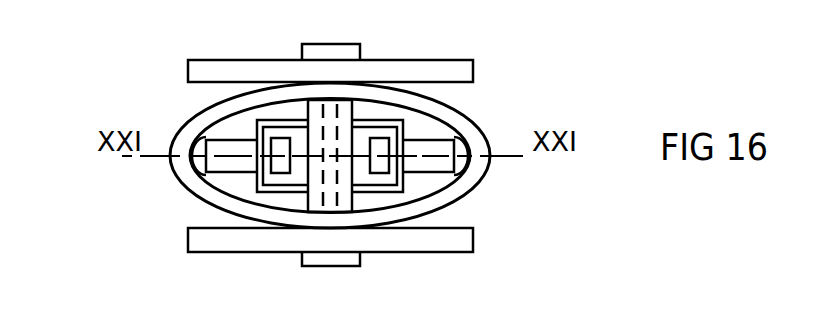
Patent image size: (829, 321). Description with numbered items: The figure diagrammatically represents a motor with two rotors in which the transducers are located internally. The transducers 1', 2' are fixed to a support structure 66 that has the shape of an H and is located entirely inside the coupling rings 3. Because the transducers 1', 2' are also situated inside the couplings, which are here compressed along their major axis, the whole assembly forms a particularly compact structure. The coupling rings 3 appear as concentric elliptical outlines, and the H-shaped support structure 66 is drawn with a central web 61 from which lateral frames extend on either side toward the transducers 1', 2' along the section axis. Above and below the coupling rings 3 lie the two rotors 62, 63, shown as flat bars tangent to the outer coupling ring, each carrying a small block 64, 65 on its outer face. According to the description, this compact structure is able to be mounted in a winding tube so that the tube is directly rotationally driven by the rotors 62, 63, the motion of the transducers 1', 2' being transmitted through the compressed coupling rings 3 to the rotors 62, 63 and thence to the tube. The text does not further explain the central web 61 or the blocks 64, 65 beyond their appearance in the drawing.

The coupling rings 3 is at (472, 133).
The central web 61 is at (330, 113).
The rotor 62 is at (238, 68).
The rotor 63 is at (235, 240).
The upper projection 64 is at (332, 48).
The lower projection 65 is at (325, 257).
The support structure 66 is at (367, 192).
The transducer 1' is at (142, 178).
The transducer 2' is at (519, 184).